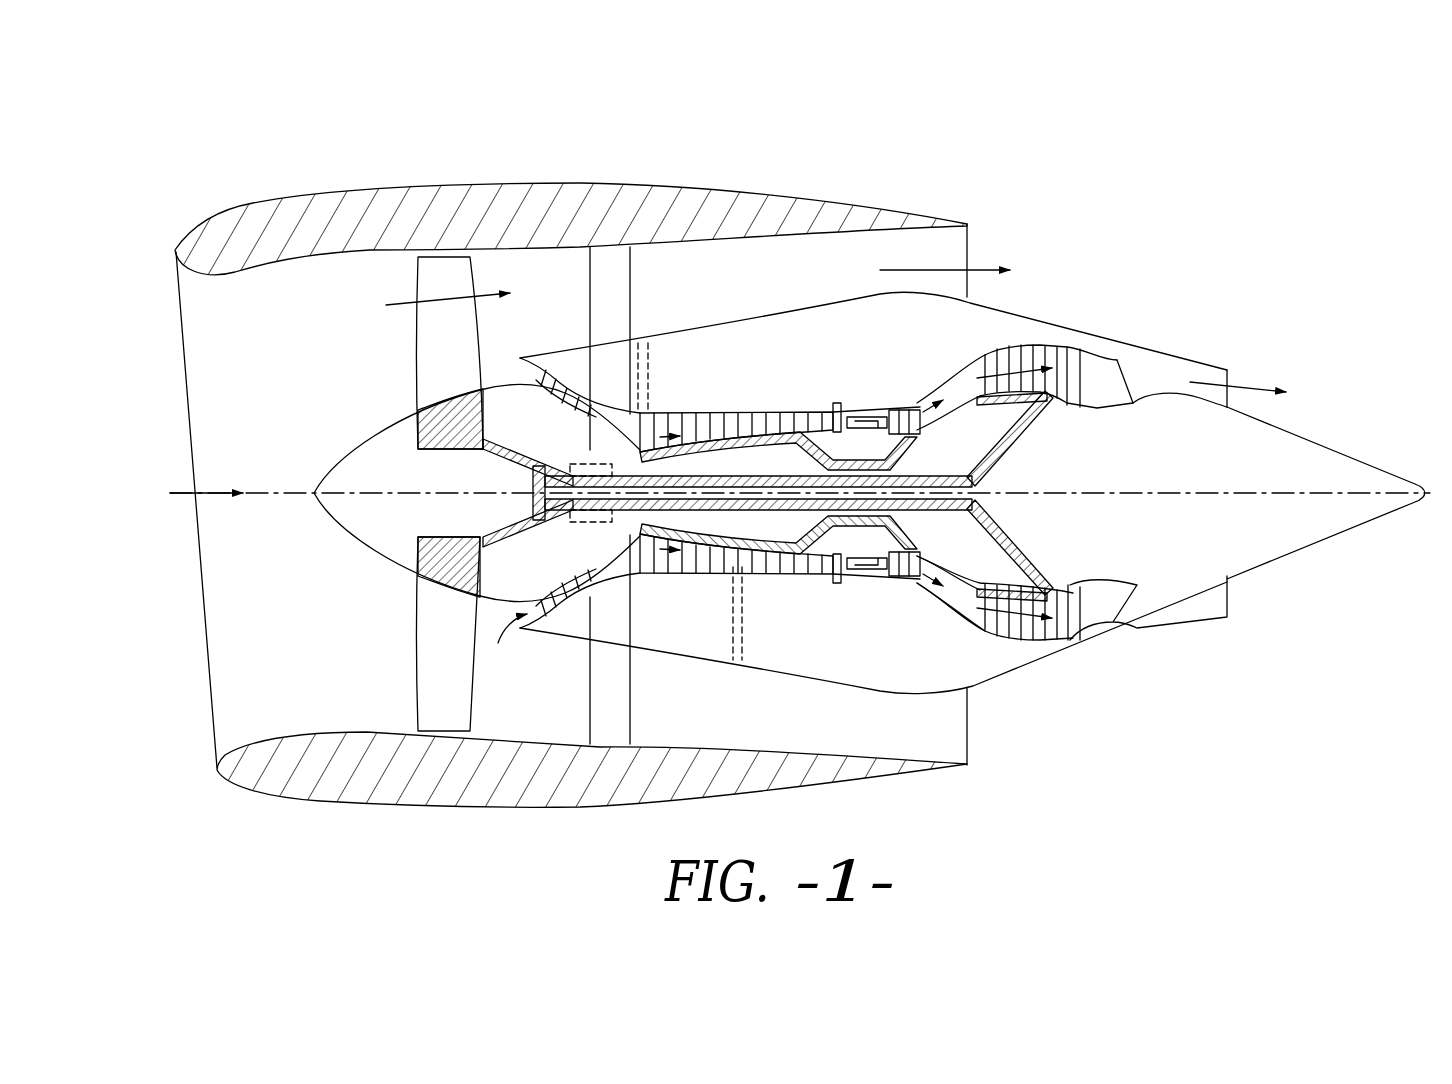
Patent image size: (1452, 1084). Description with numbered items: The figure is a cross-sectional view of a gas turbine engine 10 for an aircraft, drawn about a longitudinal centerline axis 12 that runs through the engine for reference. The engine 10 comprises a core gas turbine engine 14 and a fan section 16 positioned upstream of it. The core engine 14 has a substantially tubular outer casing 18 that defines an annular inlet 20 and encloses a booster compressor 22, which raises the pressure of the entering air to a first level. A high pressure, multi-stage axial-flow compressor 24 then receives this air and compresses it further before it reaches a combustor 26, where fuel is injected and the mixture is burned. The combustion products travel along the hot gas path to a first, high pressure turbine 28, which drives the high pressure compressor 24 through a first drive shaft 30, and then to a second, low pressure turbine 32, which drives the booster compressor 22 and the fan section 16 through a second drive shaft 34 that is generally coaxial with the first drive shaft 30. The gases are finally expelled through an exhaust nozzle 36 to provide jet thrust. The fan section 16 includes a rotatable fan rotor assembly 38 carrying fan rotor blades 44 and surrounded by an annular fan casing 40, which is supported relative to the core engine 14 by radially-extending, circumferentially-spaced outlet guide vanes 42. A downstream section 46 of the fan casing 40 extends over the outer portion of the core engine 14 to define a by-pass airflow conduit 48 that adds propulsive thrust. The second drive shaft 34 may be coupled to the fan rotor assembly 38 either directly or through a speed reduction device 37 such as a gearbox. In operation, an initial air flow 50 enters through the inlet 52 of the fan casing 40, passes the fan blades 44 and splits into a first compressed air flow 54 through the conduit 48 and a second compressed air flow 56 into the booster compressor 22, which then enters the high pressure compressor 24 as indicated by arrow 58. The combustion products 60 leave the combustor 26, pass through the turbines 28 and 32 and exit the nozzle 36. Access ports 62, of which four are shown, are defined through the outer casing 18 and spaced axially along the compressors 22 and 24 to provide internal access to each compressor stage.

The gas turbine engine 10 is at (1147, 262).
The longitudinal centerline axis 12 is at (1145, 490).
The core gas turbine engine 14 is at (801, 366).
The fan section 16 is at (491, 160).
The outer casing 18 is at (820, 683).
The annular inlet 20 is at (506, 646).
The booster compressor 22 is at (590, 577).
The high pressure compressor 24 is at (663, 560).
The combustor 26 is at (857, 560).
The first (high pressure) turbine 28 is at (935, 572).
The first (high pressure) drive shaft 30 is at (903, 442).
The second (low pressure) turbine 32 is at (1070, 640).
The second (low pressure) drive shaft 34 is at (590, 465).
The exhaust nozzle 36 is at (1228, 377).
The speed reduction device 37 is at (587, 524).
The fan rotor assembly 38 is at (481, 450).
The fan casing 40 is at (484, 803).
The outlet guide vanes 42 is at (631, 280).
The fan rotor blades 44 is at (413, 677).
The downstream section 46 is at (860, 204).
The by-pass airflow conduit 48 is at (785, 292).
The initial air flow 50 is at (208, 487).
The inlet 52 is at (213, 737).
The first compressed air flow 54 is at (427, 300).
The second compressed air flow 56 is at (501, 361).
The flow into high pressure compressor 58 is at (657, 417).
The combustion products 60 is at (908, 402).
The access ports 62 is at (481, 259).